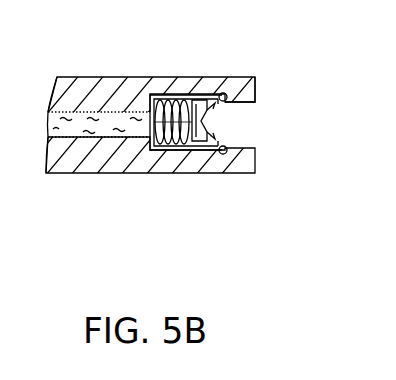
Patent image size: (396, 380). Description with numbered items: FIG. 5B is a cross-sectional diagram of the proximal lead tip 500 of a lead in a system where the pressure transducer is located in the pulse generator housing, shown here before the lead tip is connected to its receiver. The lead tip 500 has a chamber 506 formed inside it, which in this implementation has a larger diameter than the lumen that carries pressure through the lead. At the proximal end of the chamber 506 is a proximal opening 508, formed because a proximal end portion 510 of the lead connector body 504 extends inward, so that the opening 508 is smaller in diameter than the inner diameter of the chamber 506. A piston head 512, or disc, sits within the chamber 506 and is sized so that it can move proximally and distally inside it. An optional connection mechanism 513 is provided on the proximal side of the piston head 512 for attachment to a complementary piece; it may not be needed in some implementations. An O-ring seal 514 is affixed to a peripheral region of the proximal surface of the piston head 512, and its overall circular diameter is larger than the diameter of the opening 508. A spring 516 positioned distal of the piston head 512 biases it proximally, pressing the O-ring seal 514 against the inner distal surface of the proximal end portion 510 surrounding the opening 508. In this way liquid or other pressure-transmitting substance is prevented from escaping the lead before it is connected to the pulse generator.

The proximal lead tip 500 is at (124, 222).
The lead connector body 504 is at (82, 82).
The chamber 506 is at (183, 97).
The proximal opening 508 is at (268, 121).
The proximal end portion 510 is at (248, 87).
The piston head 512 is at (203, 144).
The connection mechanism 513 is at (232, 143).
The O-ring seal 514 is at (224, 93).
The spring 516 is at (152, 113).